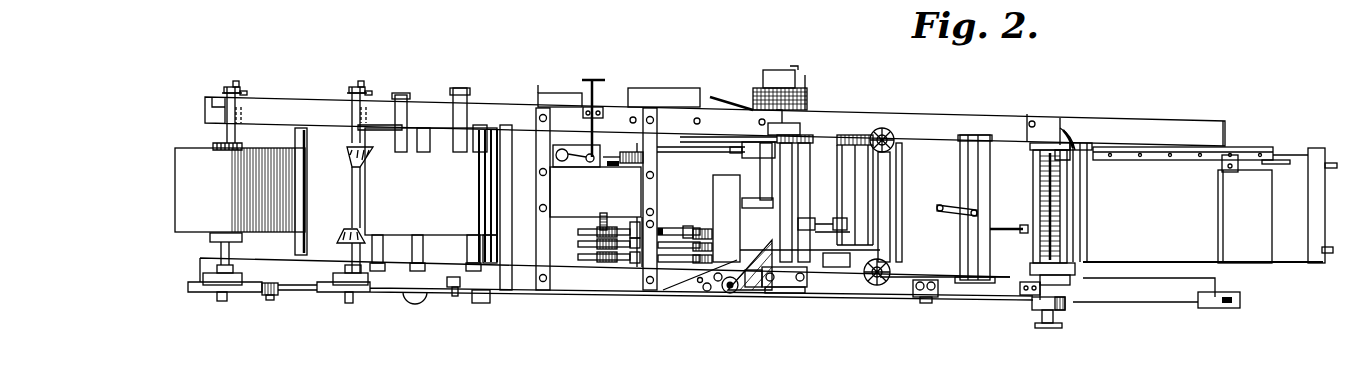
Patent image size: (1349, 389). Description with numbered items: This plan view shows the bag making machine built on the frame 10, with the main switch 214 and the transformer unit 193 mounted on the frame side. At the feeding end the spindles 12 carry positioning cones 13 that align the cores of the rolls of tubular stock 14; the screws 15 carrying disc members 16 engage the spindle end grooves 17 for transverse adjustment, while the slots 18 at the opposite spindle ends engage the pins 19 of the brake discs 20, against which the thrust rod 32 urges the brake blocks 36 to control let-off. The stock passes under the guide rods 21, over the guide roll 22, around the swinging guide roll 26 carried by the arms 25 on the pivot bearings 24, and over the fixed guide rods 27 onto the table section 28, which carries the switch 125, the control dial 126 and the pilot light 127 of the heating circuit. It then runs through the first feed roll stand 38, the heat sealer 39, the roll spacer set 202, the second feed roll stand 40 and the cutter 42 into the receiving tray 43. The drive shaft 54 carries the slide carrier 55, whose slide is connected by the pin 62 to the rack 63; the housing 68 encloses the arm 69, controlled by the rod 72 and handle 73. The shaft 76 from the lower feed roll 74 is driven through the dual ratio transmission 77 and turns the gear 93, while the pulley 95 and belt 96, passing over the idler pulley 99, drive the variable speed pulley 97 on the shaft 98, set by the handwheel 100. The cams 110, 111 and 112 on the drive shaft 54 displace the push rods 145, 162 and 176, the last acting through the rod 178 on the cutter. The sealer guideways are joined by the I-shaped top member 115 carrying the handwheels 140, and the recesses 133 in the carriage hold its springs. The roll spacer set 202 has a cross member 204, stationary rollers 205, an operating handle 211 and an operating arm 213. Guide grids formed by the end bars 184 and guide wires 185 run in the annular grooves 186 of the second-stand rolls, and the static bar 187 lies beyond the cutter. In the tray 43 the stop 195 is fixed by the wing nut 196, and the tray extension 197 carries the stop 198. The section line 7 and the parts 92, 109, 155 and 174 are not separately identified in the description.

The section line 7- 7 is at (523, 137).
The frame 10 is at (520, 298).
The spindles 12 is at (237, 136).
The positioning cones 13 is at (345, 228).
The tubular stock 14 is at (193, 222).
The screws 15 is at (238, 89).
The disc members 16 is at (246, 93).
The spindle end grooves 17 is at (225, 92).
The slots 18 is at (222, 299).
The pins 19 is at (215, 270).
The brake discs 20 is at (245, 286).
The guide rods 21 is at (293, 247).
The guide roll 22 is at (463, 140).
The pivot bearings 24 is at (450, 293).
The arms 25 is at (435, 289).
The swinging guide roll 26 is at (405, 115).
The fixed guide rods 27 is at (376, 140).
The table section 28 is at (498, 113).
The thrust rod 32 is at (297, 292).
The brake blocks 36 is at (272, 300).
The first feed roll stand 38 is at (780, 318).
The heat sealer 39 is at (873, 315).
The second feed roll stand 40 is at (1055, 108).
The cutter 42 is at (1082, 110).
The receiving tray 43 is at (1143, 170).
The drive shaft 54 is at (600, 222).
The slide carrier 55 is at (621, 151).
The pin 62 is at (637, 142).
The rack 63 is at (678, 147).
The housing 68 is at (561, 142).
The arm 69 is at (573, 143).
The rod 72 is at (596, 97).
The handle 73 is at (589, 72).
The feed rolls 74 is at (898, 140).
The shaft 76 is at (800, 113).
The dual ratio transmission mechanism 77 is at (781, 60).
The stem 92 is at (738, 104).
The gear 93 is at (803, 128).
The pulley 95 is at (772, 300).
The belt 96 is at (838, 298).
The variable speed pulley 97 is at (1066, 310).
The shaft 98 is at (1057, 288).
The idler pulley 99 is at (934, 313).
The handwheel 100 is at (1045, 332).
The bracket 109 is at (1018, 283).
The cam 110 is at (576, 243).
The cam 111 is at (613, 232).
The cam 112 is at (588, 258).
The I-shaped top member 115 is at (894, 150).
The switch 125 is at (700, 284).
The control dial 126 is at (729, 295).
The pilot light 127 is at (717, 283).
The recesses 133 is at (855, 198).
The handwheel 140 is at (880, 128).
The push rod 145 is at (673, 246).
The block 155 is at (810, 223).
The push rod 162 is at (668, 232).
The arm 174 is at (1077, 278).
The push rod 176 is at (670, 260).
The rod 178 is at (1018, 214).
The end bars 184 is at (1033, 158).
The guide wires 185 is at (1035, 172).
The annular grooves 186 is at (1045, 190).
The static bar 187 is at (1092, 196).
The transformer unit 193 is at (670, 81).
The stop 195 is at (1230, 155).
The wing nut 196 is at (1228, 173).
The tray extension 197 is at (1282, 157).
The stop 198 is at (1317, 150).
The roll spacer set 202 is at (972, 292).
The cross member 204 is at (980, 167).
The stationary roller 205 is at (975, 168).
The operating handle 211 is at (952, 203).
The operating arm 213 is at (950, 223).
The main switch 214 is at (548, 96).